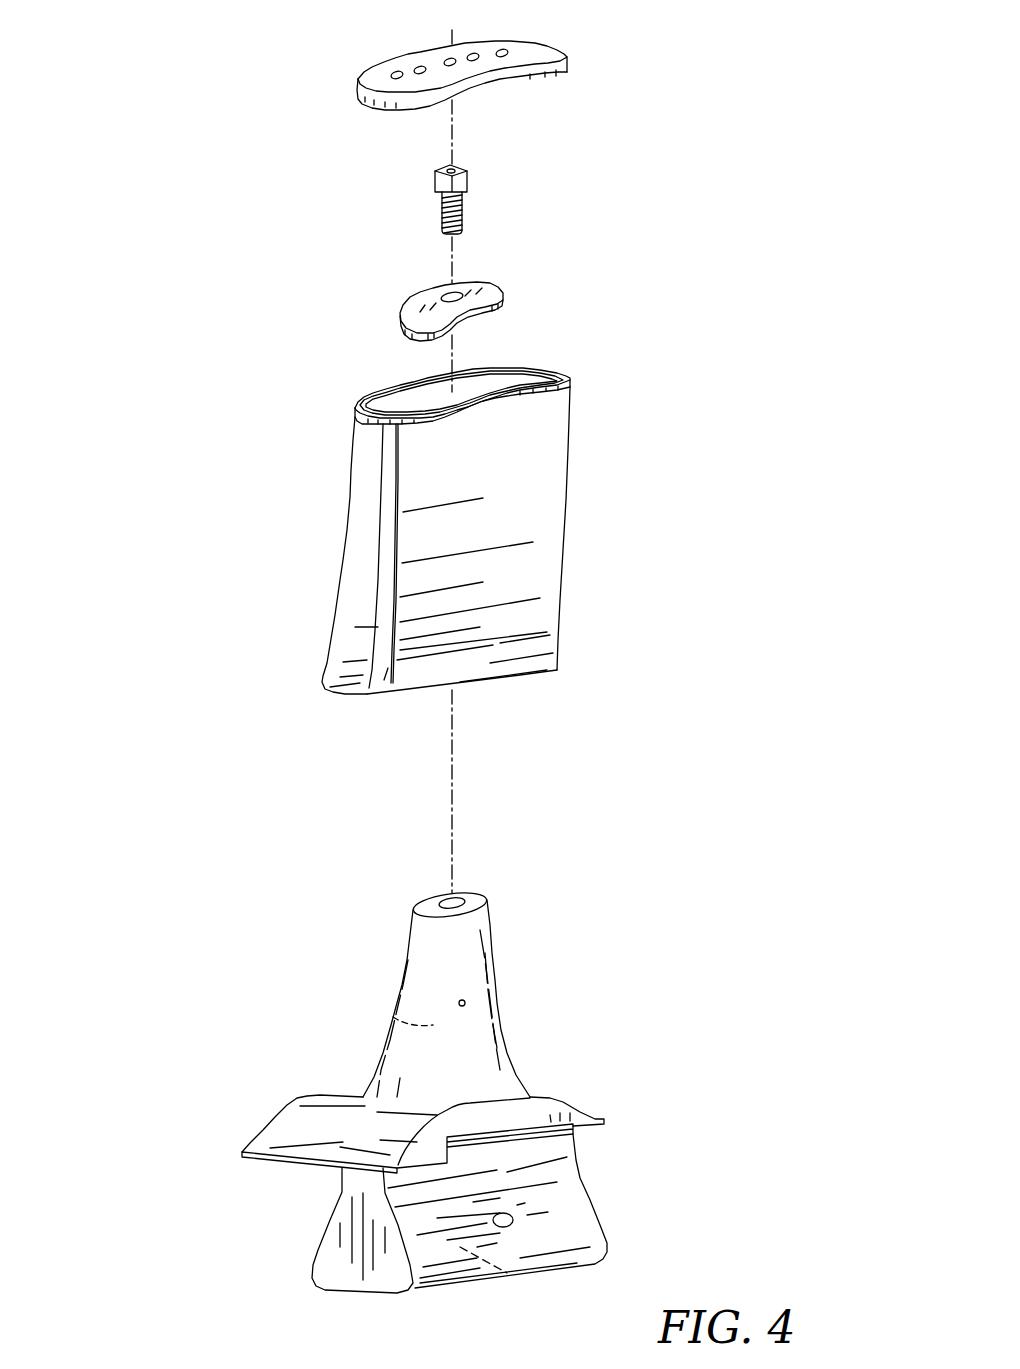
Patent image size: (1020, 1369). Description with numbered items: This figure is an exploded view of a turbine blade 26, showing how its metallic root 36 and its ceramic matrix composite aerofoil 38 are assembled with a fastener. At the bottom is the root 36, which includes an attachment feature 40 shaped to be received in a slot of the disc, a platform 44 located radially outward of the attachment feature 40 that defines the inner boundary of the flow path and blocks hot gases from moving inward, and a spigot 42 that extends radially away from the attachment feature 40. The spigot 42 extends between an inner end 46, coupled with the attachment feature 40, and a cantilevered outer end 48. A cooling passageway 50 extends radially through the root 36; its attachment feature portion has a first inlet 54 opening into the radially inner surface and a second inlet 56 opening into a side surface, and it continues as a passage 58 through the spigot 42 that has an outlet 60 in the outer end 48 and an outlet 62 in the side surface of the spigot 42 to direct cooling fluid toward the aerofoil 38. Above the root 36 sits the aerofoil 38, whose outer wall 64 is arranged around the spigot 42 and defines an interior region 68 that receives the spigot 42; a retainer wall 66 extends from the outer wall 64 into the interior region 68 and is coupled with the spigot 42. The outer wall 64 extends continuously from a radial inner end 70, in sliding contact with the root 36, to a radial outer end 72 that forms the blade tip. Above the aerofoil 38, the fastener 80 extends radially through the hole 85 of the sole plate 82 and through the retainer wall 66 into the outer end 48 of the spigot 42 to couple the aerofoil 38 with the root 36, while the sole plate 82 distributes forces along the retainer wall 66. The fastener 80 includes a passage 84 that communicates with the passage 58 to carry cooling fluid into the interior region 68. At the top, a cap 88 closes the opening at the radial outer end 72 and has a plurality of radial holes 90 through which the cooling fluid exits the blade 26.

The blade 26 is at (172, 220).
The root 36 is at (237, 910).
The aerofoil 38 is at (287, 532).
The attachment feature 40 is at (599, 1202).
The spigot 42 is at (509, 1020).
The platform 44 is at (257, 1130).
The inner end 46 is at (535, 1097).
The outer end 48 is at (484, 892).
The cooling passageway 50 is at (508, 1274).
The first inlet 54 is at (451, 1288).
The second inlet 56 is at (515, 1221).
The passage 58 is at (400, 1013).
The outlet 60 is at (453, 894).
The outlet 62 is at (465, 1000).
The outer wall 64 is at (340, 618).
The retainer wall 66 is at (506, 520).
The interior region 68 is at (391, 408).
The radial inner end 70 is at (562, 672).
The radial outer end 72 is at (572, 379).
The fastener 80 is at (410, 213).
The sole plate 82 is at (495, 283).
The passage 84 is at (447, 165).
The hole 85 is at (444, 292).
The cap 88 is at (542, 43).
The radial holes 90 is at (416, 67).